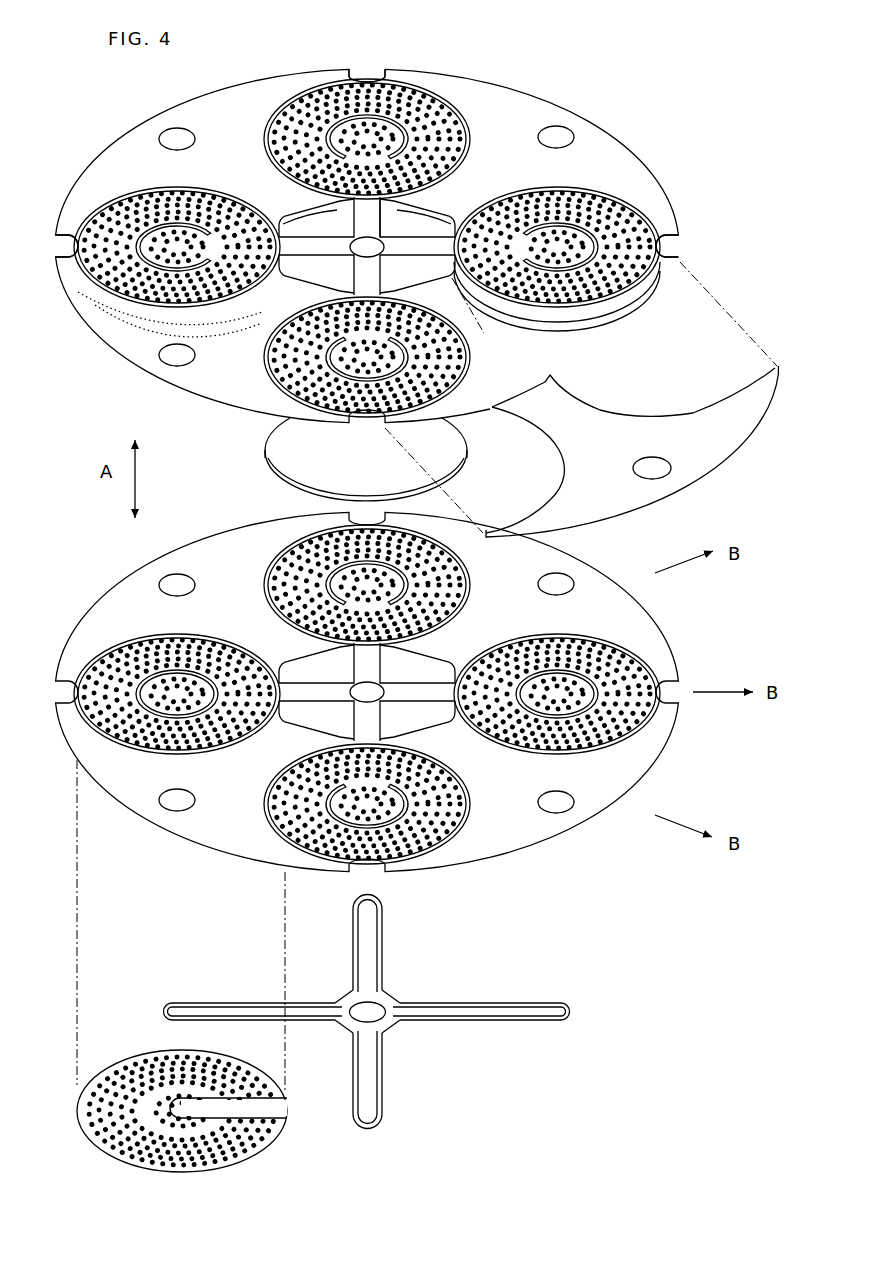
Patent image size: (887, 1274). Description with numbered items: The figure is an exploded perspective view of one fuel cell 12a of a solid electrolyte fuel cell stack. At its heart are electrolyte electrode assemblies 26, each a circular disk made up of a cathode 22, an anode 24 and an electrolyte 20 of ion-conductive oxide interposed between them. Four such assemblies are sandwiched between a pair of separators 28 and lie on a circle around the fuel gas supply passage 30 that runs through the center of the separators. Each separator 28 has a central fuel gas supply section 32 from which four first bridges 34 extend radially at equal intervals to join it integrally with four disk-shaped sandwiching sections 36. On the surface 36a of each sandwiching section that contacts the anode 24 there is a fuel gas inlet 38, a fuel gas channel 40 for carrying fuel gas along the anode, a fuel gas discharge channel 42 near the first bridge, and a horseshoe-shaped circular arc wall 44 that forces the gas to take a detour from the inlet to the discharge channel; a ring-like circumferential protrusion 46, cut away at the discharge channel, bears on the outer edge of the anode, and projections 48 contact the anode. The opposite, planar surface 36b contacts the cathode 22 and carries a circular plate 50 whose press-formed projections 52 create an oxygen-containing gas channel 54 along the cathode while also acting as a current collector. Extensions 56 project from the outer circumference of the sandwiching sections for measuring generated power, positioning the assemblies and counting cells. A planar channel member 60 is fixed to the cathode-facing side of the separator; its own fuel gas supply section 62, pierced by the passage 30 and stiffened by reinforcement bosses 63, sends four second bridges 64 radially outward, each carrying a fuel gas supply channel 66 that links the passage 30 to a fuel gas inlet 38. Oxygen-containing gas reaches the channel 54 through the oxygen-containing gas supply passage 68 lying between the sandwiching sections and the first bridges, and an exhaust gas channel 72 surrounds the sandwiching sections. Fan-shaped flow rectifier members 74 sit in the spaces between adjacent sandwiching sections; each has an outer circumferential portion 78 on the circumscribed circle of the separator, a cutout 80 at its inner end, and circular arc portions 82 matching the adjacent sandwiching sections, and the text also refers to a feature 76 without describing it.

The fuel cell 12a is at (672, 56).
The electrolyte 20 is at (267, 462).
The cathode 22 is at (266, 440).
The anode 24 is at (293, 470).
The electrolyte electrode assembly 26 is at (469, 458).
The separator 28 is at (662, 165).
The fuel gas supply passage 30 is at (352, 261).
The fuel gas supply section 32 is at (367, 246).
The first bridge 34 is at (312, 209).
The sandwiching section 36 is at (441, 88).
The surface 36a is at (285, 96).
The surface 36b is at (264, 147).
The fuel gas inlet 38 is at (555, 200).
The fuel gas channel 40 is at (615, 208).
The fuel gas discharge channel 42 is at (417, 274).
The circular arc wall 44 is at (535, 196).
The circumferential protrusion 46 is at (651, 212).
The projections 48 is at (140, 190).
The plate 50 is at (148, 1043).
The projections 52 is at (461, 356).
The oxygen-containing gas channel 54 is at (654, 296).
The extension 56 is at (351, 70).
The channel member 60 is at (468, 1024).
The fuel gas supply section 62 is at (388, 1028).
The reinforcement boss 63 is at (364, 997).
The second bridge 64 is at (418, 1002).
The fuel gas supply channel 66 is at (492, 1012).
The oxygen-containing gas supply passage 68 is at (309, 288).
The exhaust gas channel 72 is at (59, 236).
The flow rectifier member 74 is at (551, 103).
The web recess 76 is at (394, 218).
The outer circumferential portion 78 is at (583, 135).
The cutout 80 is at (422, 208).
The circular arc portion 82 is at (580, 206).